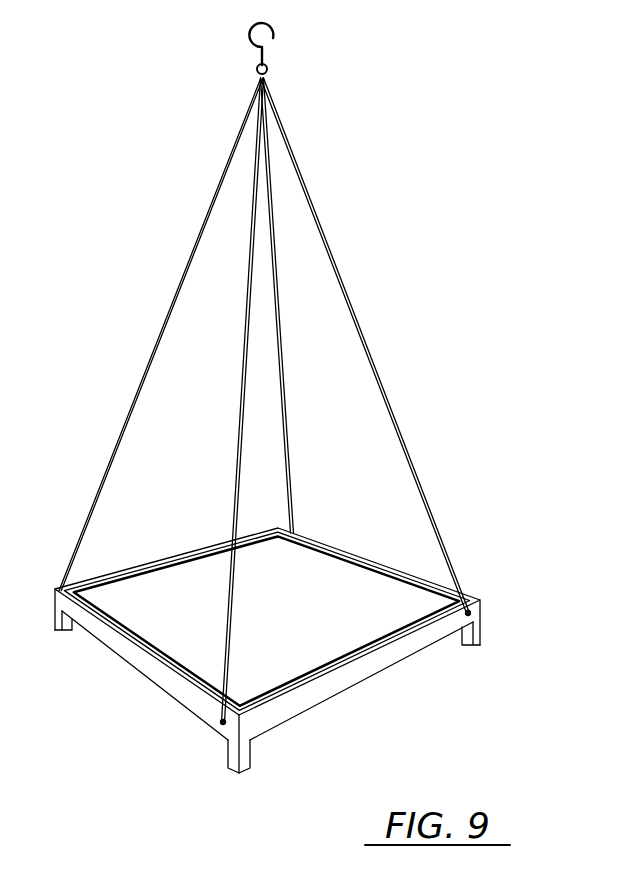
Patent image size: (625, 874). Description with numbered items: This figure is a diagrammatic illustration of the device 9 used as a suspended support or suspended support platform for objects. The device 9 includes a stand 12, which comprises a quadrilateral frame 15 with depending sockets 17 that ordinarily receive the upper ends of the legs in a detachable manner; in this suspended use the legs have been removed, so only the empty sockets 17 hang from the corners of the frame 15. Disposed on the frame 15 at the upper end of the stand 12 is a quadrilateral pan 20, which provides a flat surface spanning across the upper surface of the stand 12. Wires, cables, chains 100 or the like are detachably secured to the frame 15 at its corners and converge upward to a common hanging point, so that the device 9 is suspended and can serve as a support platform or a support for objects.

The device 9 is at (485, 408).
The wires, cables, chains 100 is at (181, 284).
The stand 12 is at (116, 652).
The quadrilateral frame 15 is at (373, 671).
The quadrilateral pan 20 is at (288, 617).
The sockets 17 is at (62, 628).